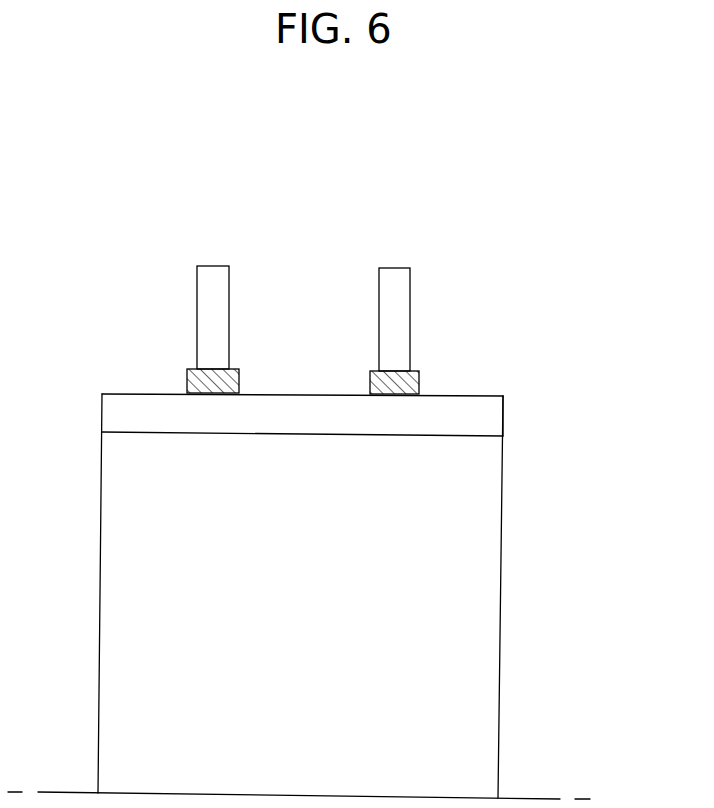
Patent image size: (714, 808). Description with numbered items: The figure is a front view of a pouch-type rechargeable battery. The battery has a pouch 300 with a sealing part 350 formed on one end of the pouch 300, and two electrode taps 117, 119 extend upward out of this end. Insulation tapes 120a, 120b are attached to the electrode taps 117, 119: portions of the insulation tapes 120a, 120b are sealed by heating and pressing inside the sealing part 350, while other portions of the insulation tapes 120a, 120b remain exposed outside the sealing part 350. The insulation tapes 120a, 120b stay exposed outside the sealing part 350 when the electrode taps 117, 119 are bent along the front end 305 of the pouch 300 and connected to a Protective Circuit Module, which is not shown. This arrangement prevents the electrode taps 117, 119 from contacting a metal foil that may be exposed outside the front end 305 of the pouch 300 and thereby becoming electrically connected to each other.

The electrode tap 117 is at (214, 275).
The electrode tap 119 is at (397, 278).
The insulation tape 120a is at (205, 368).
The insulation tape 120b is at (402, 370).
The pouch 300 is at (525, 606).
The front end 305 is at (493, 395).
The sealing part 350 is at (486, 420).